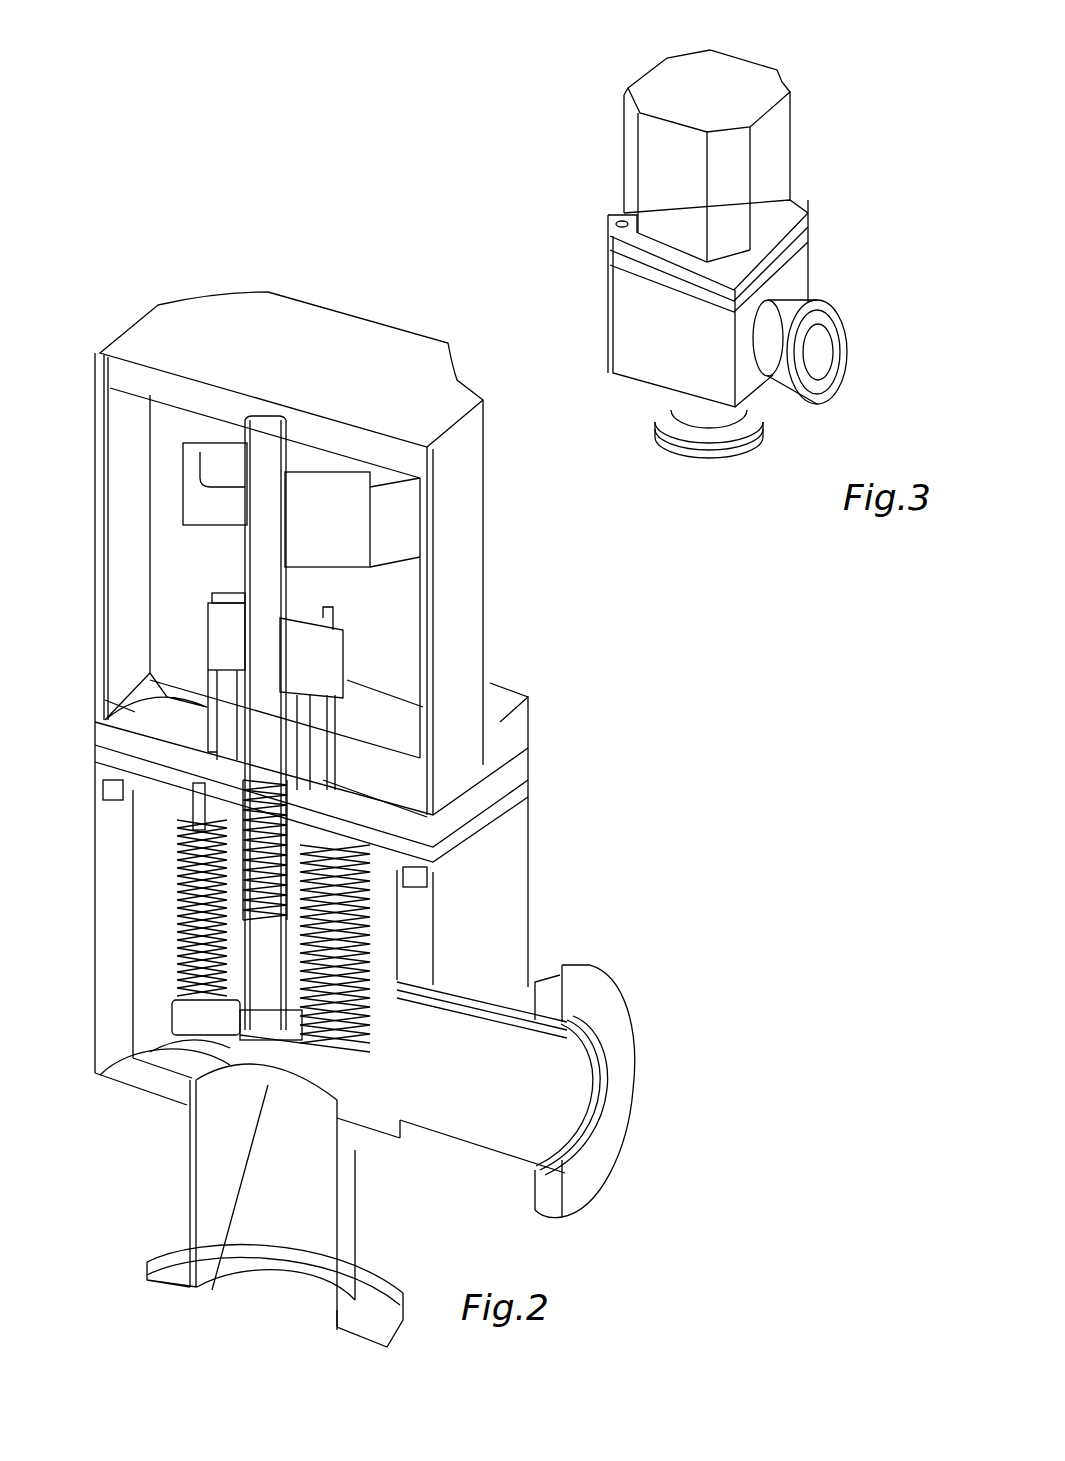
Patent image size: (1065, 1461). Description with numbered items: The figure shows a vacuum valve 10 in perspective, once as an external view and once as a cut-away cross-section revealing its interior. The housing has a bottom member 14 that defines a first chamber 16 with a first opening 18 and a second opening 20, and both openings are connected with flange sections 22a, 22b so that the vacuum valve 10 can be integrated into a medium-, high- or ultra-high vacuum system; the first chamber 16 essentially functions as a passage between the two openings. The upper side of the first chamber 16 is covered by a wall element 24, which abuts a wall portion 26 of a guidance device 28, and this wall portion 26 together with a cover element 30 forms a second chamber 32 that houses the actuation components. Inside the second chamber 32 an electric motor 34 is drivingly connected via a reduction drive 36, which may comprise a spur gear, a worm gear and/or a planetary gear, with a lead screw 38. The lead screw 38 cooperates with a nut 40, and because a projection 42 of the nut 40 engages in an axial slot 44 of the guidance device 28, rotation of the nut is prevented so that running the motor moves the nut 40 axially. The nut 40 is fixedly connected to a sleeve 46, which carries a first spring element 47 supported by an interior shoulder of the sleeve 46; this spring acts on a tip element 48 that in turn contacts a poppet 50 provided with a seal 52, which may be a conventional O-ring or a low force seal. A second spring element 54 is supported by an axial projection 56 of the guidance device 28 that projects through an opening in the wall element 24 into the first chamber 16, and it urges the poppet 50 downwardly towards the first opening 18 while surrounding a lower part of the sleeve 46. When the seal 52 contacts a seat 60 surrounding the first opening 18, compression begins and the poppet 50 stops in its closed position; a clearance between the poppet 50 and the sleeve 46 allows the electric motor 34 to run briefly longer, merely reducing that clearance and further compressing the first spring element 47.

In FIG. 3, the vacuum valve 10 is at (848, 98).
In FIG. 3, the bottom member 14 is at (795, 270).
In FIG. 2, the first chamber 16 is at (150, 912).
In FIG. 2, the first opening 18 is at (268, 1085).
In FIG. 2, the second opening 20 is at (422, 1063).
In FIG. 2, the flange section 22a is at (348, 1222).
In FIG. 3, the flange section 22a is at (718, 425).
In FIG. 2, the flange section 22b is at (513, 1167).
In FIG. 3, the flange section 22b is at (812, 392).
In FIG. 2, the wall element 24 is at (535, 782).
In FIG. 3, the wall element 24 is at (605, 256).
In FIG. 2, the wall portion 26 is at (535, 750).
In FIG. 3, the wall portion 26 is at (605, 234).
In FIG. 2, the guidance device 28 is at (118, 712).
In FIG. 2, the cover element 30 is at (243, 325).
In FIG. 3, the cover element 30 is at (783, 165).
In FIG. 2, the second chamber 32 is at (405, 682).
In FIG. 2, the electric motor 34 is at (188, 568).
In FIG. 2, the reduction drive 36 is at (400, 520).
In FIG. 2, the lead screw 38 is at (262, 580).
In FIG. 2, the nut 40 is at (227, 640).
In FIG. 2, the projection 42 is at (322, 660).
In FIG. 2, the axial slot 44 is at (337, 730).
In FIG. 2, the sleeve 46 is at (228, 790).
In FIG. 2, the first spring element 47 is at (365, 872).
In FIG. 2, the tip element 48 is at (267, 1017).
In FIG. 2, the poppet 50 is at (177, 1002).
In FIG. 2, the seal 52 is at (190, 1063).
In FIG. 2, the second spring element 54 is at (208, 885).
In FIG. 2, the axial projection 56 is at (198, 800).
In FIG. 2, the seat 60 is at (195, 1046).